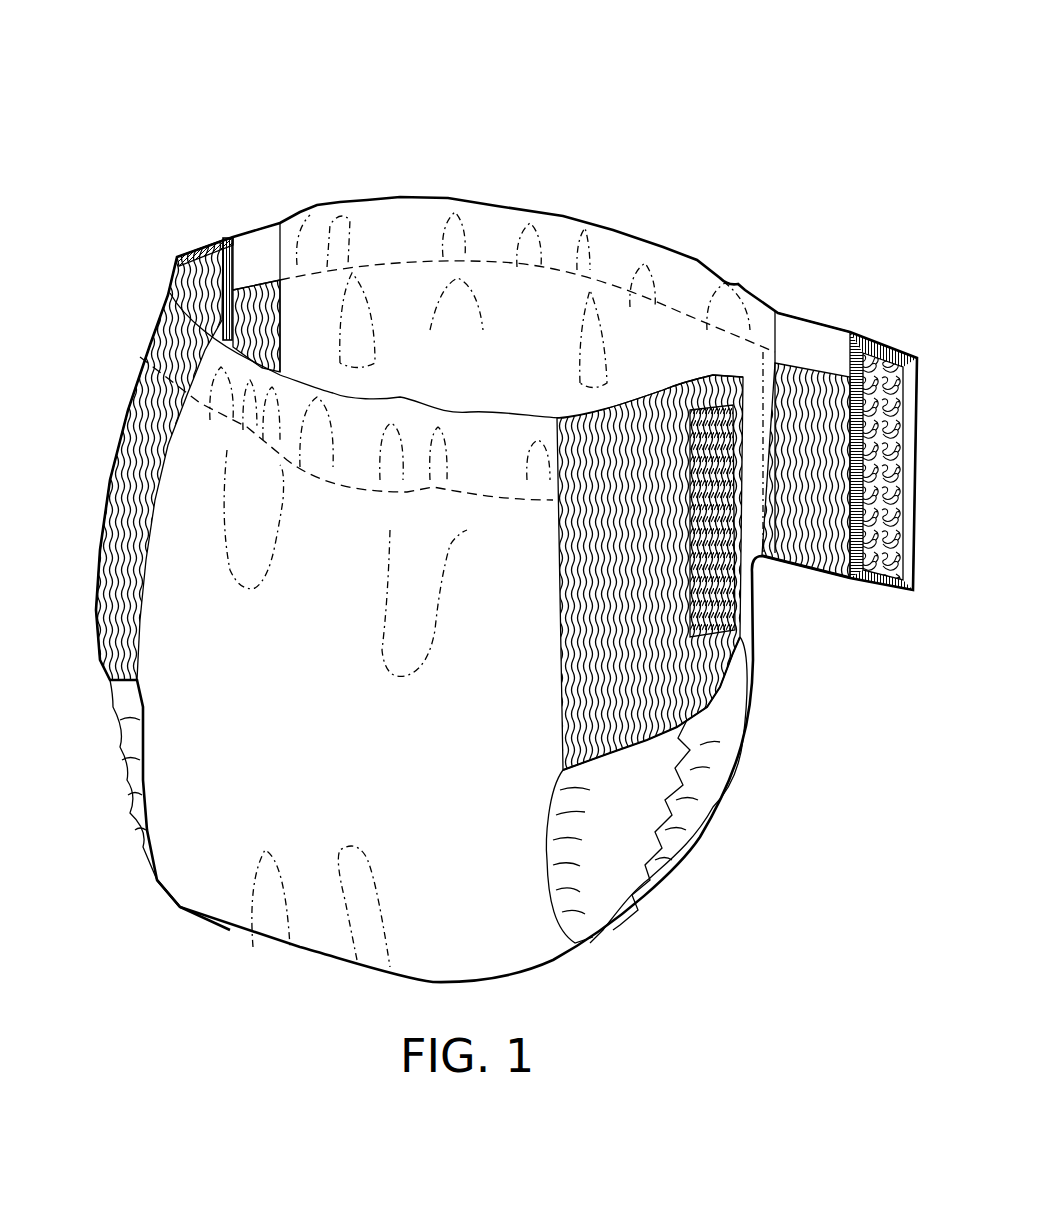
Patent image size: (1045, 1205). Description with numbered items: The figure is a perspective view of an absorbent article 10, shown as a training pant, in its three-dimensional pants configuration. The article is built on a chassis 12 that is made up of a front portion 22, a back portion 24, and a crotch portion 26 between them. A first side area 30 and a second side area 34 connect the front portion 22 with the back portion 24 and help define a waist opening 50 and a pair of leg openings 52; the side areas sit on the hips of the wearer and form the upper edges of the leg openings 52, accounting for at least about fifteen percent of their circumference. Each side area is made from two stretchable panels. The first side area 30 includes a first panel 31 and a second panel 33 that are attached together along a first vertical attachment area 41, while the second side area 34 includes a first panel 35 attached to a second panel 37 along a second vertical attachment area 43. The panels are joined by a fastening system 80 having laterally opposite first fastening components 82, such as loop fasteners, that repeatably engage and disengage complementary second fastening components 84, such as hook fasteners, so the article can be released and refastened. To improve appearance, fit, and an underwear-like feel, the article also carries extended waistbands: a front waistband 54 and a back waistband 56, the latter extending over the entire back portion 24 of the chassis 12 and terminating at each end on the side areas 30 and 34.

The absorbent article 10 is at (350, 63).
The chassis 12 is at (227, 863).
The front portion 22 is at (314, 651).
The back portion 24 is at (420, 366).
The crotch portion 26 is at (277, 927).
The first side area 30 is at (145, 309).
The first panel 31 is at (224, 245).
The second panel 33 is at (141, 413).
The second side area 34 is at (812, 632).
The first panel 35 is at (817, 390).
The second panel 37 is at (677, 693).
The first vertical attachment area 41 is at (207, 243).
The second vertical attachment area 43 is at (710, 377).
The waist opening 50 is at (462, 172).
The leg openings 52 is at (725, 833).
The front waistband 54 is at (487, 437).
The back waistband 56 is at (557, 240).
The fastening system 80 is at (893, 333).
The first fastening components 82 is at (863, 577).
The second fastening components 84 is at (700, 589).